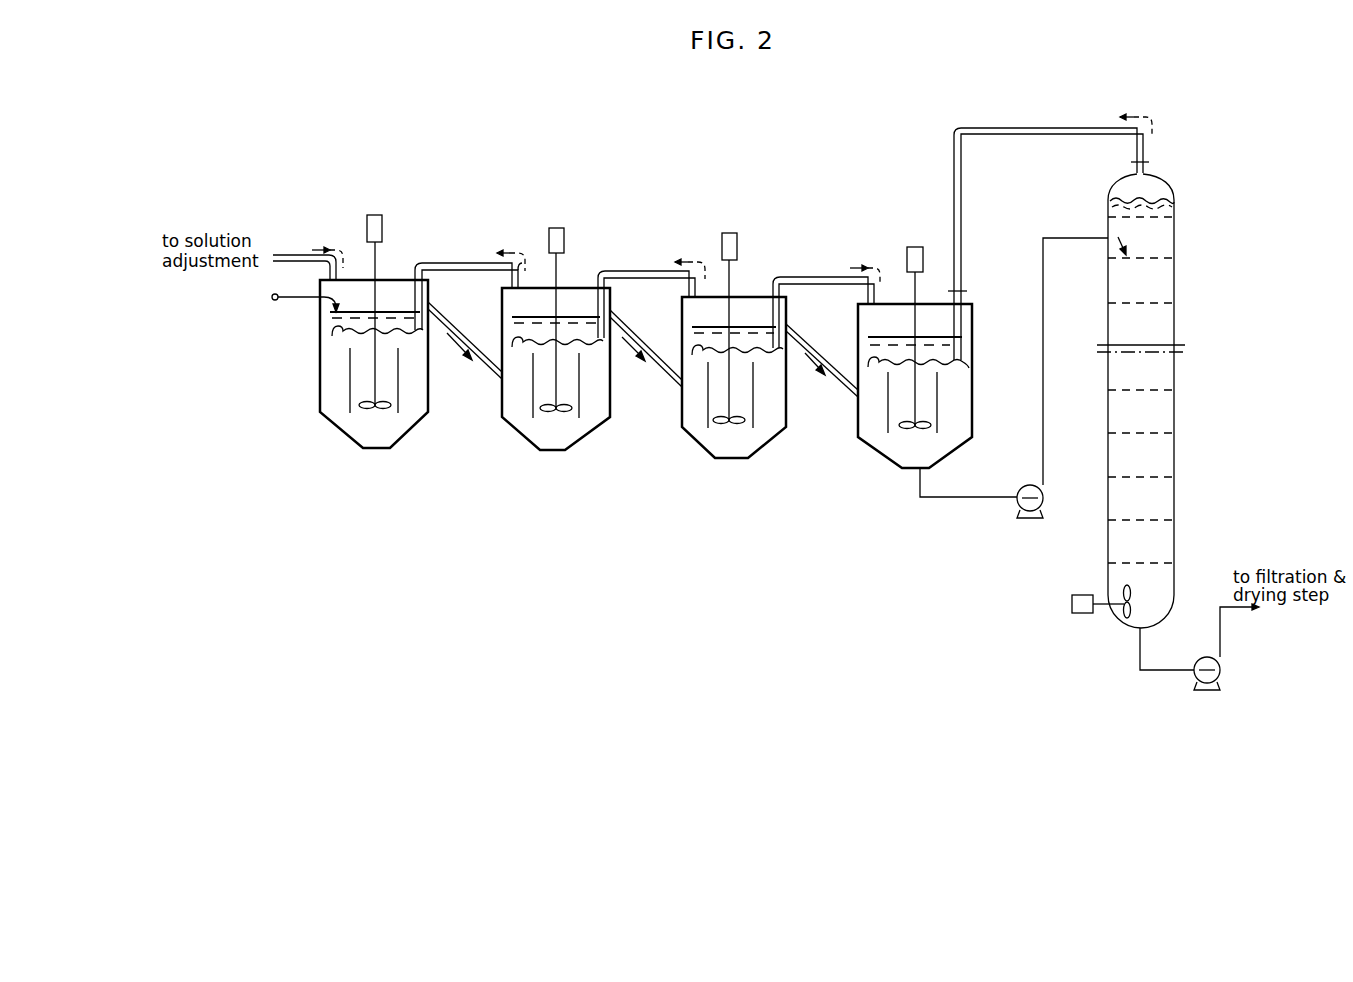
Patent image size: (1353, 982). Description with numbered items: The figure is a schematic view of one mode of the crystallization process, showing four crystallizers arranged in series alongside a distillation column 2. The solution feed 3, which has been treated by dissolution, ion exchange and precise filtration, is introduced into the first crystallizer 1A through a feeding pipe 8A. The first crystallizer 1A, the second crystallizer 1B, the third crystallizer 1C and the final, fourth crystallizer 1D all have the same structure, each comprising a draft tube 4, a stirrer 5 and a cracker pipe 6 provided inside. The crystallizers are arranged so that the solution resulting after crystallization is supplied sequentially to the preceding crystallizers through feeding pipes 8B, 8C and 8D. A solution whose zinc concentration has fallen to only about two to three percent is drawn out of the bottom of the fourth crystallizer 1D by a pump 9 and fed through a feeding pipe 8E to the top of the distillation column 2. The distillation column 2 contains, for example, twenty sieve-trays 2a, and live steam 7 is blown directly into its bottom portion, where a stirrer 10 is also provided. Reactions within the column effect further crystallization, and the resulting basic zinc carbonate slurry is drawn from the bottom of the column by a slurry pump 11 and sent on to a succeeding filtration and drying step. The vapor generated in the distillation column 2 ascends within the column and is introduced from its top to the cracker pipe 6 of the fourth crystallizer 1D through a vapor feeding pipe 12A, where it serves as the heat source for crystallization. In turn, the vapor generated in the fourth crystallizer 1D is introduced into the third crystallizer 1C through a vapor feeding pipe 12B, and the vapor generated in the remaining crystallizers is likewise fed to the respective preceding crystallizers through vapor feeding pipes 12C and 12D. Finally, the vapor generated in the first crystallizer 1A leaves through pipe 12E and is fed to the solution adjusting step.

The first crystallizer 1A is at (428, 398).
The second crystallizer 1B is at (610, 402).
The third crystallizer 1C is at (786, 410).
The final (fourth) crystallizer 1D is at (972, 425).
The distillation column 2 is at (1174, 418).
The sieve-tray 2a is at (1161, 217).
The solution feed 3 is at (267, 297).
The draft tube 4 is at (398, 355).
The stirrer 5 is at (381, 410).
The cracker pipe 6 is at (332, 336).
The live steam 7 is at (1112, 580).
The feeding pipe 8A is at (297, 297).
The feeding pipe 8B is at (469, 338).
The feeding pipe 8C is at (644, 338).
The feeding pipe 8D is at (823, 350).
The feeding pipe 8E is at (1043, 324).
The pump 9 is at (1043, 498).
The stirrer 10 is at (1122, 612).
The slurry pump 11 is at (1220, 671).
The vapor feeding pipe 12A is at (1026, 128).
The vapor feeding pipe 12B is at (808, 277).
The vapor feeding pipe 12C is at (630, 269).
The vapor feeding pipe 12D is at (451, 261).
The vapor pipe 12E is at (294, 256).